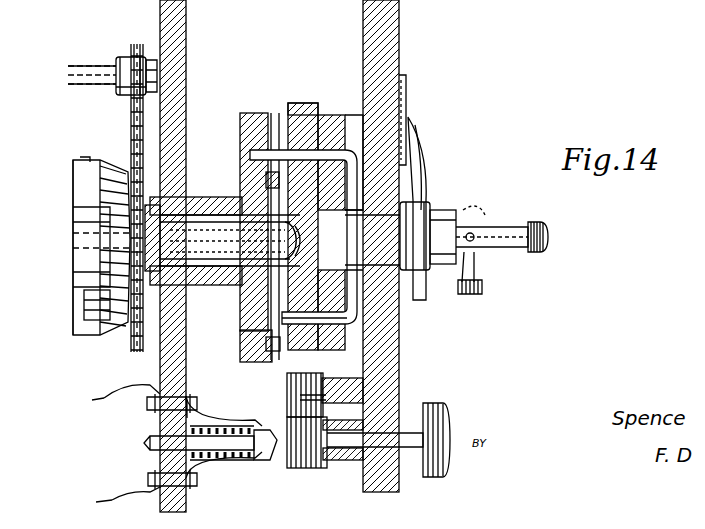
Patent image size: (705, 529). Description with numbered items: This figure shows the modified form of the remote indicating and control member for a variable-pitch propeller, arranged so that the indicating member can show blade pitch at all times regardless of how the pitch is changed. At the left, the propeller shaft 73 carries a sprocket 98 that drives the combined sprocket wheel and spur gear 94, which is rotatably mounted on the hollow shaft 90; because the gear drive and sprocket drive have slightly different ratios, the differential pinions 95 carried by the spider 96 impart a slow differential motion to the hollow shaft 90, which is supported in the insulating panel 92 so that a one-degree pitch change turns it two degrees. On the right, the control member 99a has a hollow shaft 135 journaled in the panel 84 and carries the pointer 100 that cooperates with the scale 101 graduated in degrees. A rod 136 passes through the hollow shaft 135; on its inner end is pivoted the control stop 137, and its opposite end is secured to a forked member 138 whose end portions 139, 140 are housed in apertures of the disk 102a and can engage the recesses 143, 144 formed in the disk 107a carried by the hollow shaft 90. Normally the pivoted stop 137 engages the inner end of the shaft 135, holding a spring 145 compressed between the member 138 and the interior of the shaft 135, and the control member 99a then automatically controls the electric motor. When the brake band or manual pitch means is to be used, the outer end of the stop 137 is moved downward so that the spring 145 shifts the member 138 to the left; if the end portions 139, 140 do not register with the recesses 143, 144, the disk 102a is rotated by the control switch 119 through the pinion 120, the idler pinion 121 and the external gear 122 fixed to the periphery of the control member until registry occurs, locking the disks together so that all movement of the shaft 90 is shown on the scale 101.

The shaft 73 is at (96, 84).
The sprocket 98 is at (128, 56).
The combined sprocket wheel and spur gear 94 is at (131, 160).
The differential pinions 95 is at (84, 179).
The spider 96 is at (80, 290).
The hollow shaft 90 is at (205, 212).
The insulating panel 92 is at (216, 256).
The panel 84 is at (394, 338).
The disk 107a is at (240, 146).
The recess 143 is at (264, 156).
The recess 144 is at (262, 318).
The control member 99a is at (326, 106).
The disk 102a is at (318, 120).
The end portion 139 is at (319, 150).
The end portion 140 is at (300, 332).
The forked member 138 is at (368, 162).
The rod 136 is at (372, 227).
The external gear 122 is at (300, 355).
The scale 101 is at (408, 107).
The pointer 100 is at (428, 183).
The spring 145 is at (399, 283).
The control stop 137 is at (516, 228).
The hollow shaft 135 is at (376, 292).
The idler pinion 121 is at (288, 405).
The pinion 120 is at (310, 456).
The control switch 119 is at (184, 443).